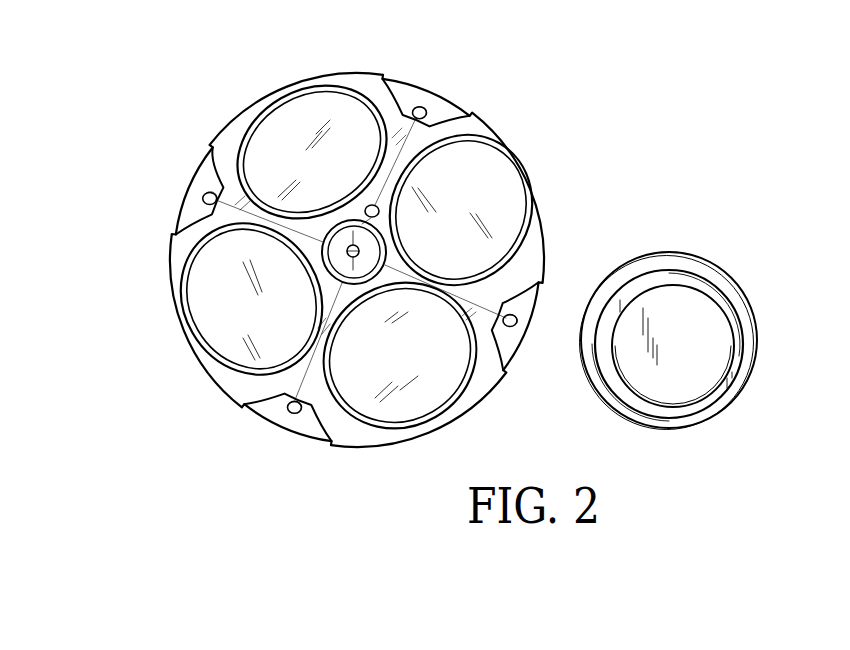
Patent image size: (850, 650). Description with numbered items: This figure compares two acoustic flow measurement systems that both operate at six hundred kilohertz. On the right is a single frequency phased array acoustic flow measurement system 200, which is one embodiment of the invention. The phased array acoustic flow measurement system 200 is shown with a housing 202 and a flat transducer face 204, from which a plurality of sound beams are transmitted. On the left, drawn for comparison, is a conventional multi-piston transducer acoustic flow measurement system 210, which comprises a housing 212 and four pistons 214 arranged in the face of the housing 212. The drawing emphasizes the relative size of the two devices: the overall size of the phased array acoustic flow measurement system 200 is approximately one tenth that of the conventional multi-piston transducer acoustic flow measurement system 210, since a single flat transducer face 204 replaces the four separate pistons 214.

The phased array acoustic flow measurement system 200 is at (705, 247).
The housing 202 is at (632, 262).
The flat transducer face 204 is at (693, 372).
The conventional multi-piston transducer acoustic flow measurement system 210 is at (468, 95).
The housing 212 is at (474, 122).
The pistons 214 is at (290, 130).